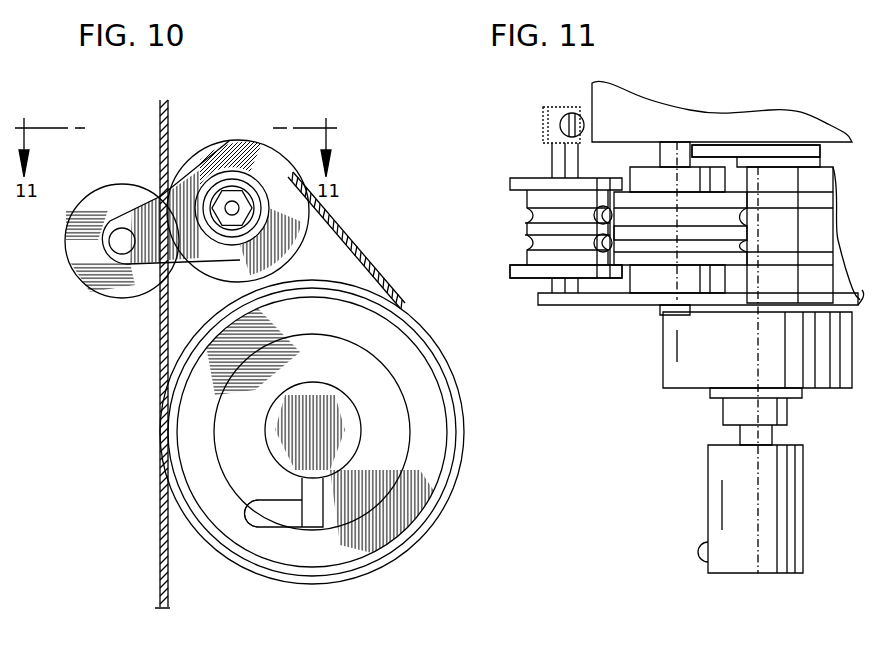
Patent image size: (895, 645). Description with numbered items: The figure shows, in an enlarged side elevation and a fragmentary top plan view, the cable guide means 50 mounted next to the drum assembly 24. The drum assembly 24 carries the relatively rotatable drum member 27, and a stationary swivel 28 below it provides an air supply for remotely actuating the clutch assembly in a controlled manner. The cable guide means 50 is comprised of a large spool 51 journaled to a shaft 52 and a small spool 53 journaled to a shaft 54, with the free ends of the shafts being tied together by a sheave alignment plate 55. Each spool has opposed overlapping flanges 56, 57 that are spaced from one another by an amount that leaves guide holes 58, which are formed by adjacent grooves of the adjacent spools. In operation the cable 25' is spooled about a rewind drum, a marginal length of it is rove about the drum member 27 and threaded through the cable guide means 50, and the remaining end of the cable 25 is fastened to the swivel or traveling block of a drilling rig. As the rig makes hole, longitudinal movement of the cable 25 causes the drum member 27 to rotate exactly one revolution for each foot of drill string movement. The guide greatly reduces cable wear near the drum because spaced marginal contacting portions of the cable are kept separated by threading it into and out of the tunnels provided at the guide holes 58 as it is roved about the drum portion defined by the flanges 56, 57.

In FIG. 10, the drum assembly 24 is at (413, 442).
In FIG. 11, the drum assembly 24 is at (697, 393).
In FIG. 10, the cable 25 is at (282, 239).
In FIG. 10, the cable 25' is at (127, 518).
In FIG. 10, the drum member 27 is at (450, 497).
In FIG. 11, the drum member 27 is at (837, 237).
In FIG. 10, the stationary swivel 28 is at (363, 408).
In FIG. 11, the stationary swivel 28 is at (708, 457).
In FIG. 10, the cable guide means 50 is at (157, 197).
In FIG. 10, the large spool 51 is at (236, 140).
In FIG. 11, the large spool 51 is at (733, 187).
In FIG. 11, the shaft 52 is at (682, 145).
In FIG. 10, the small spool 53 is at (72, 273).
In FIG. 11, the small spool 53 is at (513, 193).
In FIG. 10, the shaft 54 is at (116, 243).
In FIG. 11, the shaft 54 is at (548, 155).
In FIG. 10, the sheave alignment plate 55 is at (137, 254).
In FIG. 11, the sheave alignment plate 55 is at (603, 305).
In FIG. 11, the flange 56 is at (510, 278).
In FIG. 11, the flange 57 is at (655, 268).
In FIG. 11, the guide holes 58 is at (590, 205).